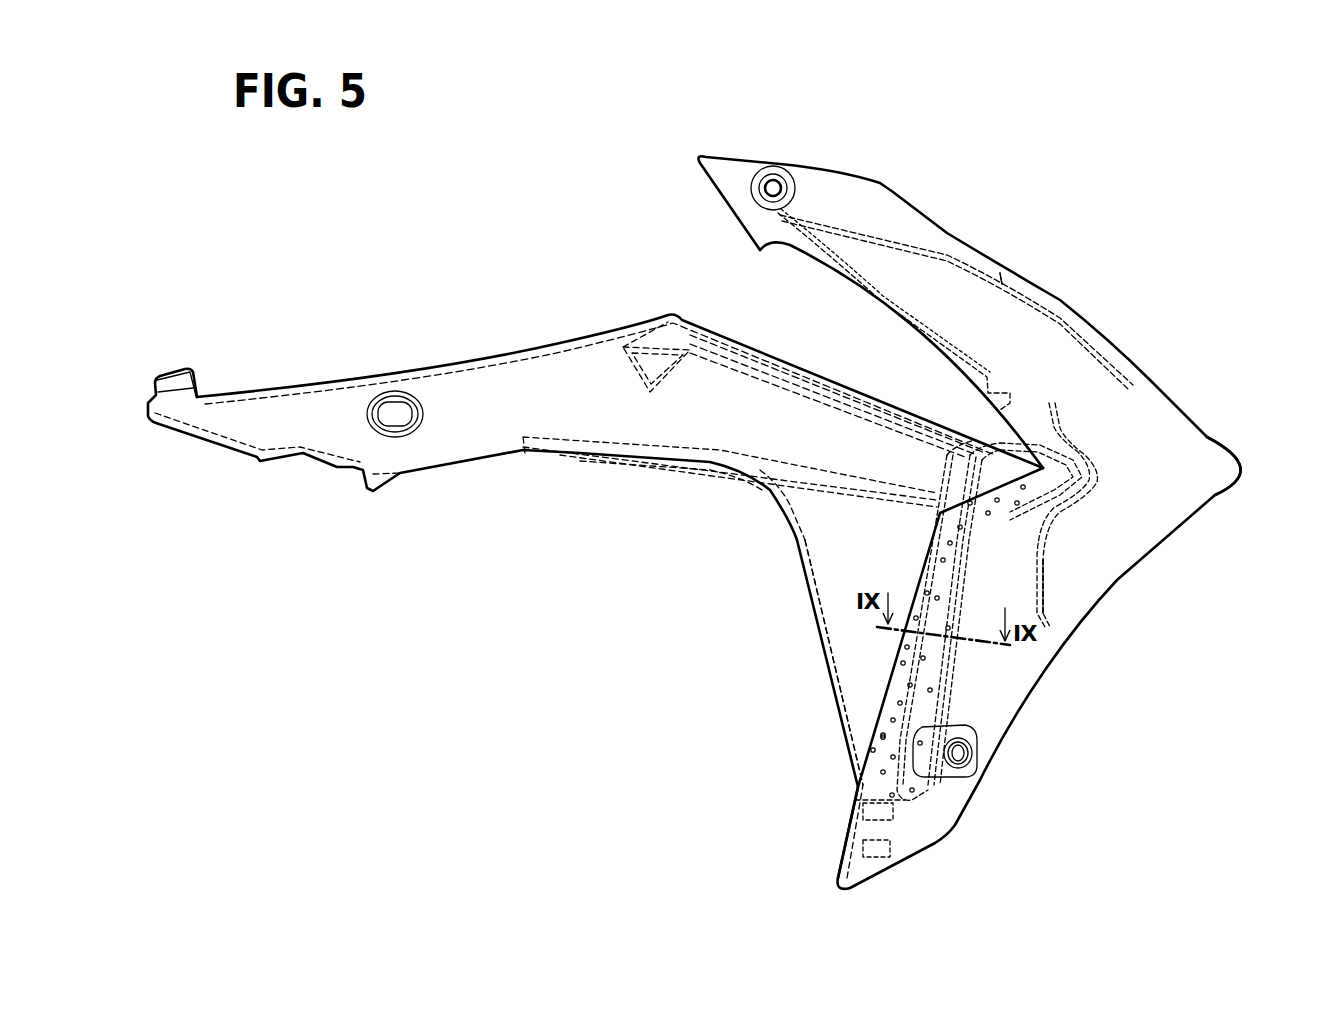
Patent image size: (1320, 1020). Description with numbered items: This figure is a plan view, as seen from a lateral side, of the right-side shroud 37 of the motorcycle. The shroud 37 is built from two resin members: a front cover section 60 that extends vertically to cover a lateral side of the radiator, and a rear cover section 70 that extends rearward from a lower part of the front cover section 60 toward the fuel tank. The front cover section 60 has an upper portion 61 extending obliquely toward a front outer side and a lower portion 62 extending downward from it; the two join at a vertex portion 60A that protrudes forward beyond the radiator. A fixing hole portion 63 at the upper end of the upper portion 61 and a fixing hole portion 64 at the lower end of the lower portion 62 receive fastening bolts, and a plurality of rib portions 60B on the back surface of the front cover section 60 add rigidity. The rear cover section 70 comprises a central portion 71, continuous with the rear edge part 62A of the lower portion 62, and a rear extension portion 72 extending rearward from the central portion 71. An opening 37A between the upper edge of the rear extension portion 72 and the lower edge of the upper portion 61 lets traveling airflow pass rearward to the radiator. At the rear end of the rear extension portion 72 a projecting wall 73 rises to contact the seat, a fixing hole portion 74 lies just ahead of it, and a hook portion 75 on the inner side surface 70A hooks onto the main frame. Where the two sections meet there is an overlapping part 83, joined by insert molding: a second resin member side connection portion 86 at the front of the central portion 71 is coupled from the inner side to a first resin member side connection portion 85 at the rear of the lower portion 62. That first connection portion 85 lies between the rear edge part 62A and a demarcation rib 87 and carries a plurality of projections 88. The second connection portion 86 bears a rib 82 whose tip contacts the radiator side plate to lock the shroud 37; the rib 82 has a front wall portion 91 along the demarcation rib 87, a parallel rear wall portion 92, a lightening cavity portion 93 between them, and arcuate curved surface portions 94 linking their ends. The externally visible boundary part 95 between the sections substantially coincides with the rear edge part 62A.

The shroud 37 is at (1046, 120).
The opening 37A is at (885, 345).
The front cover section 60 is at (1157, 381).
The vertex portion 60A is at (1207, 470).
The rib portions 60B is at (1007, 270).
The upper portion 61 is at (1010, 323).
The lower portion 62 is at (997, 688).
The rear edge part 62A is at (900, 640).
The fixing hole portion 63 is at (769, 166).
The fixing hole portion 64 is at (933, 770).
The rear cover section 70 is at (601, 323).
The inner side surface 70A is at (603, 383).
The central portion 71 is at (873, 655).
The rear extension portion 72 is at (500, 385).
The projecting wall 73 is at (174, 375).
The fixing hole portion 74 is at (383, 396).
The hook portion 75 is at (640, 337).
The rib 82 is at (980, 566).
The overlapping part 83 is at (962, 706).
The first resin member side connection portion 85 is at (887, 763).
The second resin member side connection portion 86 is at (883, 728).
The demarcation rib 87 is at (887, 707).
The projections 88 is at (1027, 505).
The front wall portion 91 is at (960, 597).
The rear wall portion 92 is at (925, 572).
The lightening cavity portion 93 is at (960, 665).
The arcuate curved surface portions 94 is at (1073, 432).
The boundary part 95 is at (893, 675).